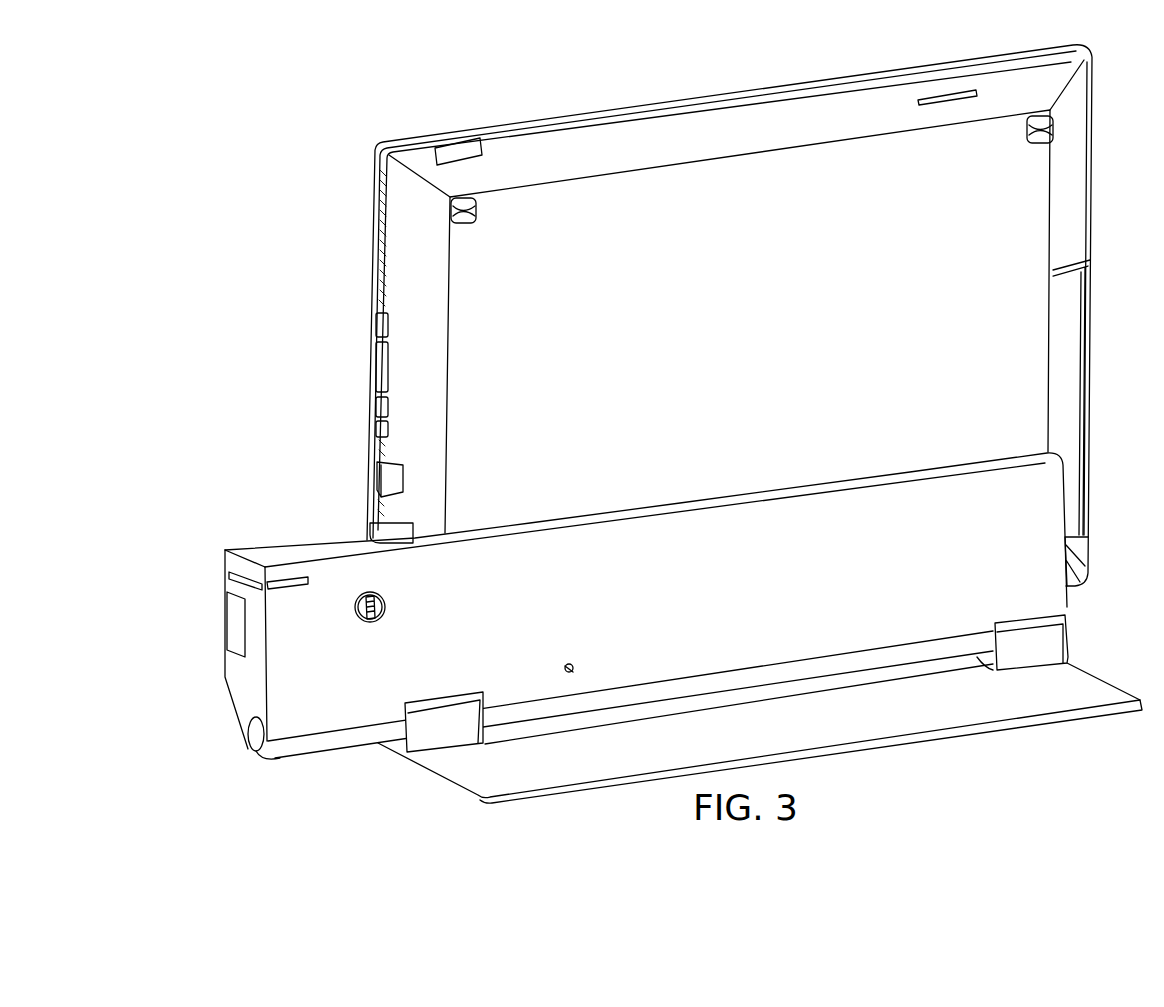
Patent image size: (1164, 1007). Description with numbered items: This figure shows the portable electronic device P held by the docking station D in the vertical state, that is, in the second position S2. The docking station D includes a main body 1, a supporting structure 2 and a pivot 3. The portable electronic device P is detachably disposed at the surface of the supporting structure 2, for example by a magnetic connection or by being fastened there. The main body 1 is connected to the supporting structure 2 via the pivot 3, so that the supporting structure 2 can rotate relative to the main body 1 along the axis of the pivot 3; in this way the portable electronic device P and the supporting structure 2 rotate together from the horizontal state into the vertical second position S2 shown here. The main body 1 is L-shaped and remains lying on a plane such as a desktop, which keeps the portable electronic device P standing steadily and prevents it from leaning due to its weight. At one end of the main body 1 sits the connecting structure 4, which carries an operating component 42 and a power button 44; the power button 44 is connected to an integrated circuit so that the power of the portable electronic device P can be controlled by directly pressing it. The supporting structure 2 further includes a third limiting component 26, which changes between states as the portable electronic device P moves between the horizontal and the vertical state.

The main body 1 is at (1073, 641).
The supporting structure 2 is at (1047, 506).
The pivot 3 is at (443, 727).
The connecting structure 4 is at (233, 677).
The third limiting component 26 is at (578, 666).
The operating component 42 is at (232, 622).
The power button 44 is at (233, 577).
The portable electronic device P is at (669, 86).
The docking station D is at (297, 523).
The second position S2 is at (280, 122).